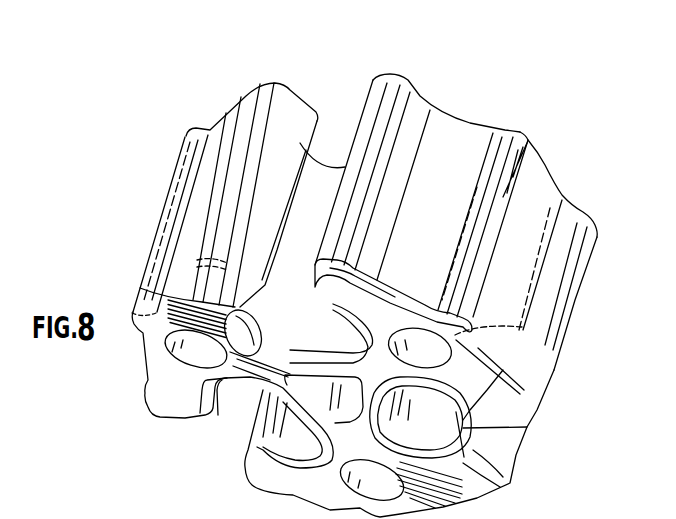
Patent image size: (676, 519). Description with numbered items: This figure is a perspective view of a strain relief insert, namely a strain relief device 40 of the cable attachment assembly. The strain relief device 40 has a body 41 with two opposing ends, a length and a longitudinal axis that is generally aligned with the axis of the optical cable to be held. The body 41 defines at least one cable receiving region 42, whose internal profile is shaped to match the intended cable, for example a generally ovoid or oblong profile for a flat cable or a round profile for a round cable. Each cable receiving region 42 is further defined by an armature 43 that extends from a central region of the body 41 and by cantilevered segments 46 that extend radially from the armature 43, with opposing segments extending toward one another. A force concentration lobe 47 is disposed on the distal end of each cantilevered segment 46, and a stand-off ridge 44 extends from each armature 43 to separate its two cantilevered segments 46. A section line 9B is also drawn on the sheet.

The strain relief device 40 is at (108, 208).
The body 41 is at (240, 297).
The cable receiving region 42 is at (332, 121).
The armature 43 is at (455, 333).
The stand-off ridge 44 is at (530, 138).
The cantilevered segment 46 is at (450, 128).
The force concentration lobe 47 is at (577, 256).
The section line 9B is at (60, 518).